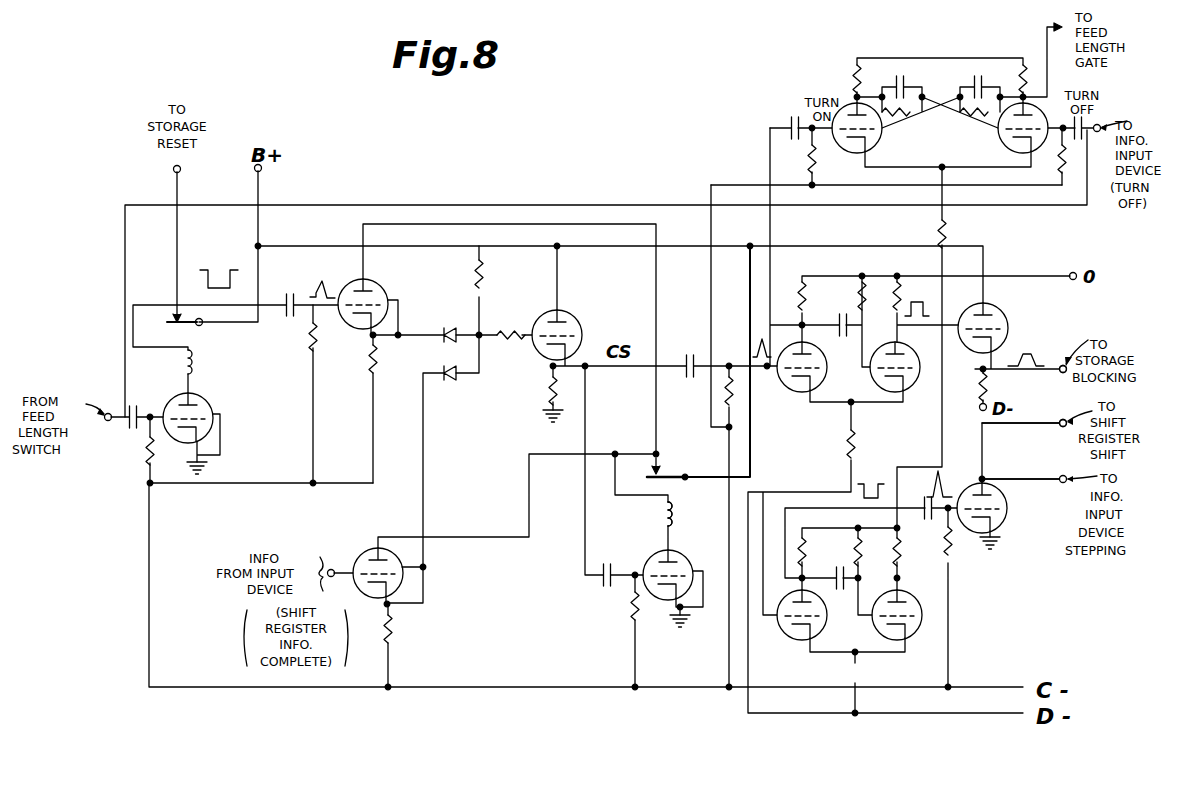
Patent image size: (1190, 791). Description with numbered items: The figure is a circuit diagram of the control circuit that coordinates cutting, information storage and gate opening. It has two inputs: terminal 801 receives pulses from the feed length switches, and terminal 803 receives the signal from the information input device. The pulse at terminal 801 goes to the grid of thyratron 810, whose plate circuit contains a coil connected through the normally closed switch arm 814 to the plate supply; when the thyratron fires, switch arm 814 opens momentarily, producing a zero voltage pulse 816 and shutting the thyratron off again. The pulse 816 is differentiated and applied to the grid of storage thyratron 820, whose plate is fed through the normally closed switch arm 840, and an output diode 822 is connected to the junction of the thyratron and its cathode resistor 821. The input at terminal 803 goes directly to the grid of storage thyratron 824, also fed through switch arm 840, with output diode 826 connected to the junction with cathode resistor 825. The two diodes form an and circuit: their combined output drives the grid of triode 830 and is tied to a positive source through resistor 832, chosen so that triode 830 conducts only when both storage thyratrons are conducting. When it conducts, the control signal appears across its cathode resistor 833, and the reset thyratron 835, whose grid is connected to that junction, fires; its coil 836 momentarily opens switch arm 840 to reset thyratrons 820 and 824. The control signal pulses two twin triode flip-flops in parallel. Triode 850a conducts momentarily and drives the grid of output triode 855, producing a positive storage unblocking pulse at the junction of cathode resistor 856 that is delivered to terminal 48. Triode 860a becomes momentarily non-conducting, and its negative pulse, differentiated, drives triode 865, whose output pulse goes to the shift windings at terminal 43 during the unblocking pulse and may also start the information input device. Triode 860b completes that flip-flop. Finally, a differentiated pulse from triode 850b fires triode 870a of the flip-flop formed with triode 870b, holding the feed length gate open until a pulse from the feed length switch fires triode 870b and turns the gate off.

The terminal 801 is at (116, 432).
The terminal 803 is at (331, 568).
The thyratron 810 is at (205, 402).
The switch arm 814 is at (200, 333).
The zero voltage pulse 816 is at (215, 282).
The storage thyratron 820 is at (380, 288).
The cathode resistor 821 is at (370, 360).
The output diode 822 is at (450, 326).
The storage thyratron 824 is at (393, 557).
The cathode resistor 825 is at (392, 628).
The output diode 826 is at (450, 382).
The triode 830 is at (575, 318).
The resistor 832 is at (481, 282).
The cathode resistor 833 is at (549, 390).
The reset thyratron 835 is at (648, 557).
The coil 836 is at (675, 512).
The switch arm 840 is at (668, 474).
The triode 850a is at (900, 392).
The triode 850b is at (800, 392).
The output triode 855 is at (1000, 313).
The cathode resistor 856 is at (988, 388).
The triode 860a is at (790, 638).
The triode 860b is at (903, 640).
The triode 865 is at (1000, 524).
The triode 870a is at (845, 152).
The triode 870b is at (1000, 136).
The terminal 43 is at (1055, 428).
The terminal 48 is at (1060, 363).